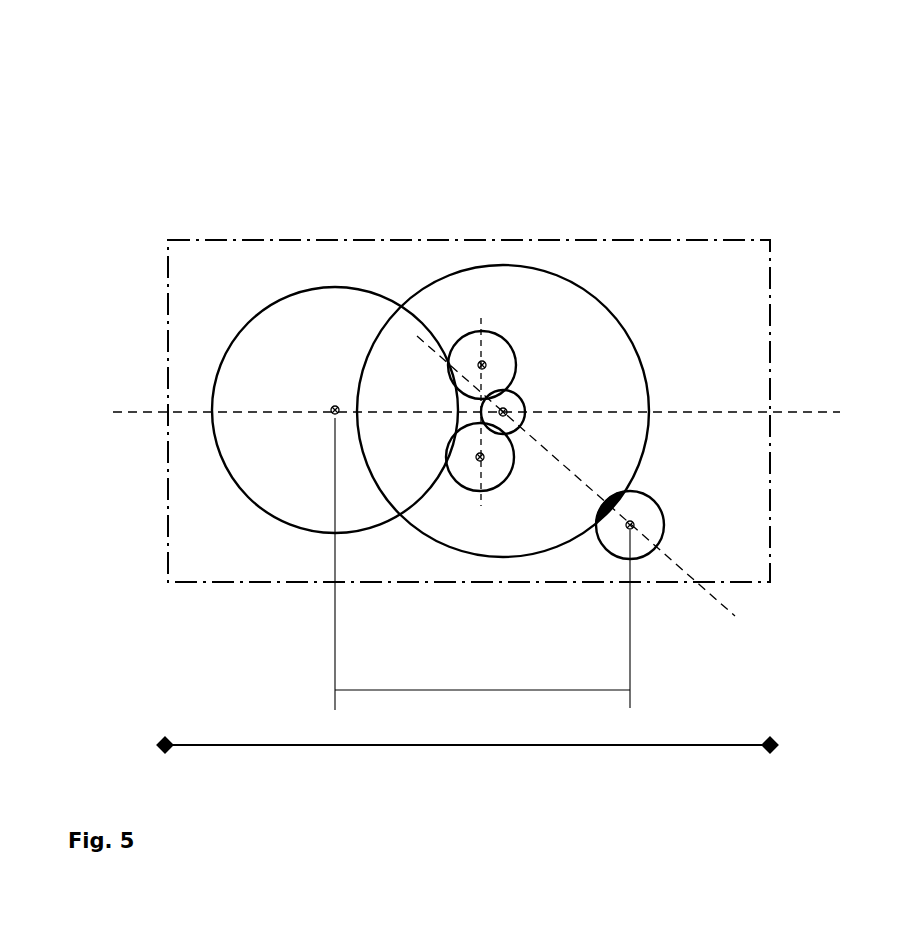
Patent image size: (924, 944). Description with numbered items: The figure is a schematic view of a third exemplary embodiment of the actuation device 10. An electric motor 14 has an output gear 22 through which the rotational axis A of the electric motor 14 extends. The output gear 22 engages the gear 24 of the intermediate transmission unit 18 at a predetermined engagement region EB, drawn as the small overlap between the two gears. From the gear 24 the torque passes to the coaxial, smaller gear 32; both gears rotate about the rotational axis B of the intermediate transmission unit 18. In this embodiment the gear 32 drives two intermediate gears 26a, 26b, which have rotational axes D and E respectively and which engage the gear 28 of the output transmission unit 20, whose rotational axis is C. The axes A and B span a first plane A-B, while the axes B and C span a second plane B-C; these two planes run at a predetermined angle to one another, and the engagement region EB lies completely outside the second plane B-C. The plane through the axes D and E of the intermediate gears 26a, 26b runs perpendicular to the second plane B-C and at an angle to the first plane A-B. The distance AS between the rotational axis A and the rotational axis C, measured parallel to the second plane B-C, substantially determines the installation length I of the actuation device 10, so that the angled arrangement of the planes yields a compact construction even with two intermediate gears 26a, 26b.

The actuation device 10 is at (690, 116).
The intermediate transmission unit 18 is at (505, 170).
The output transmission unit 20 is at (272, 168).
The gear of the output transmission unit 28 is at (268, 300).
The gear of the intermediate transmission unit 24 is at (562, 275).
The gear with a smaller diameter 32 is at (516, 392).
The intermediate gear 26b is at (459, 350).
The intermediate gear 26a is at (458, 484).
The electric motor 14 is at (640, 562).
The output gear of the electric motor 22 is at (612, 558).
The rotational axis of the electric motor A is at (630, 525).
The rotational axis of the intermediate transmission unit B is at (503, 412).
The rotational axis of the output transmission unit C is at (335, 414).
The rotational axis of intermediate gear 26a D is at (480, 457).
The rotational axis of intermediate gear 26b E is at (482, 365).
The engagement region EB is at (617, 497).
The distance between rotational axis A and rotational axis C AS is at (482, 564).
The installation length I is at (467, 757).
The second plane B-C is at (508, 416).
The first plane A-B is at (601, 485).